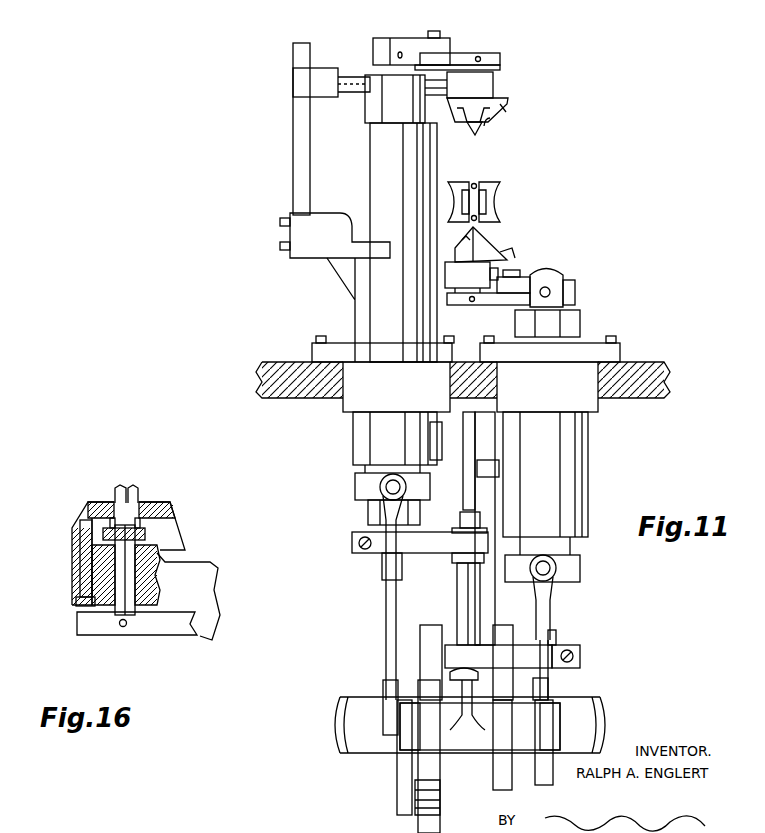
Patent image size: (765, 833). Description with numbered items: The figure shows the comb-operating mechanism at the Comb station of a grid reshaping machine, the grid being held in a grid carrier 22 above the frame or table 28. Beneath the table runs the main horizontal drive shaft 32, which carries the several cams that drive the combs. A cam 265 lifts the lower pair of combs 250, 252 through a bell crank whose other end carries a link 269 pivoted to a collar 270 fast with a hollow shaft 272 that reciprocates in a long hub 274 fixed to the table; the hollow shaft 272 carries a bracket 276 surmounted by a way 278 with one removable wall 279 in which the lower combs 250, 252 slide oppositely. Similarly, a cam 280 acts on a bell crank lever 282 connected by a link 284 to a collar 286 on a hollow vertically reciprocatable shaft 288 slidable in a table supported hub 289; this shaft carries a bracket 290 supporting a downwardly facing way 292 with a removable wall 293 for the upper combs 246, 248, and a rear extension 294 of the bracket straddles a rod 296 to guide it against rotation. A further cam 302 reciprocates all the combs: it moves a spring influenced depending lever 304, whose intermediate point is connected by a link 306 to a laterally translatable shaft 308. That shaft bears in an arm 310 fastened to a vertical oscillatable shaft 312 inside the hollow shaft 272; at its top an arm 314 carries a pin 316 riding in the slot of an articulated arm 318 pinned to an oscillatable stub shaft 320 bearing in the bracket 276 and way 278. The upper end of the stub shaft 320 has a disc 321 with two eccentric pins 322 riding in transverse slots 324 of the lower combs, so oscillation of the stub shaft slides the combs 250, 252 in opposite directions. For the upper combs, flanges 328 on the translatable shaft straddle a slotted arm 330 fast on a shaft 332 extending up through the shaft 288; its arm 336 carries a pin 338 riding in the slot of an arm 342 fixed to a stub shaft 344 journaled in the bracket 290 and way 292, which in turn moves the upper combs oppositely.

In FIG. 11, the grid carrier 22 is at (521, 187).
In FIG. 11, the frame or table 28 is at (666, 384).
In FIG. 11, the main horizontal drive shaft 32 is at (592, 733).
In FIG. 11, the upper comb 246 is at (472, 135).
In FIG. 11, the upper comb 248 is at (483, 127).
In FIG. 11, the lower comb 250 is at (462, 249).
In FIG. 16, the lower comb 250 is at (117, 486).
In FIG. 11, the lower comb 252 is at (478, 231).
In FIG. 16, the lower comb 252 is at (137, 486).
In FIG. 11, the cam 265 is at (560, 722).
In FIG. 11, the link 269 is at (556, 690).
In FIG. 11, the collar 270 is at (580, 573).
In FIG. 11, the hollow shaft 272 is at (560, 607).
In FIG. 11, the long hub 274 is at (589, 468).
In FIG. 11, the bracket 276 is at (563, 282).
In FIG. 16, the bracket 276 is at (207, 566).
In FIG. 11, the way 278 is at (458, 260).
In FIG. 16, the way 278 is at (88, 525).
In FIG. 11, the removable wall 279 is at (498, 252).
In FIG. 11, the cam 280 is at (440, 772).
In FIG. 11, the bell crank lever 282 is at (397, 792).
In FIG. 11, the link 284 is at (385, 633).
In FIG. 11, the collar 286 is at (355, 487).
In FIG. 11, the hollow vertically reciprocatable shaft 288 is at (370, 165).
In FIG. 11, the table supported hub 289 is at (352, 443).
In FIG. 11, the bracket 290 is at (493, 85).
In FIG. 11, the downwardly facing way 292 is at (457, 116).
In FIG. 11, the removable wall 293 is at (505, 103).
In FIG. 11, the rear extension 294 is at (326, 68).
In FIG. 11, the rod 296 is at (293, 58).
In FIG. 11, the cam 302 is at (493, 782).
In FIG. 11, the depending lever 304 is at (496, 511).
In FIG. 11, the link 306 is at (470, 673).
In FIG. 11, the laterally translatable shaft 308 is at (457, 597).
In FIG. 11, the arm 310 is at (580, 654).
In FIG. 11, the vertical oscillatable shaft 312 is at (556, 640).
In FIG. 11, the arm 314 is at (548, 266).
In FIG. 11, the pin 316 is at (512, 276).
In FIG. 11, the articulated arm 318 is at (460, 305).
In FIG. 16, the articulated arm 318 is at (145, 636).
In FIG. 16, the oscillatable stub shaft 320 is at (140, 585).
In FIG. 16, the disc 321 is at (80, 570).
In FIG. 16, the eccentric pins 322 is at (146, 500).
In FIG. 16, the transverse slots 324 is at (150, 525).
In FIG. 11, the flanges 328 is at (458, 531).
In FIG. 11, the arm 330 is at (450, 553).
In FIG. 11, the shaft 332 is at (382, 578).
In FIG. 11, the arm 336 is at (420, 36).
In FIG. 11, the pin 338 is at (441, 32).
In FIG. 11, the arm 342 is at (500, 60).
In FIG. 11, the stub shaft 344 is at (500, 69).